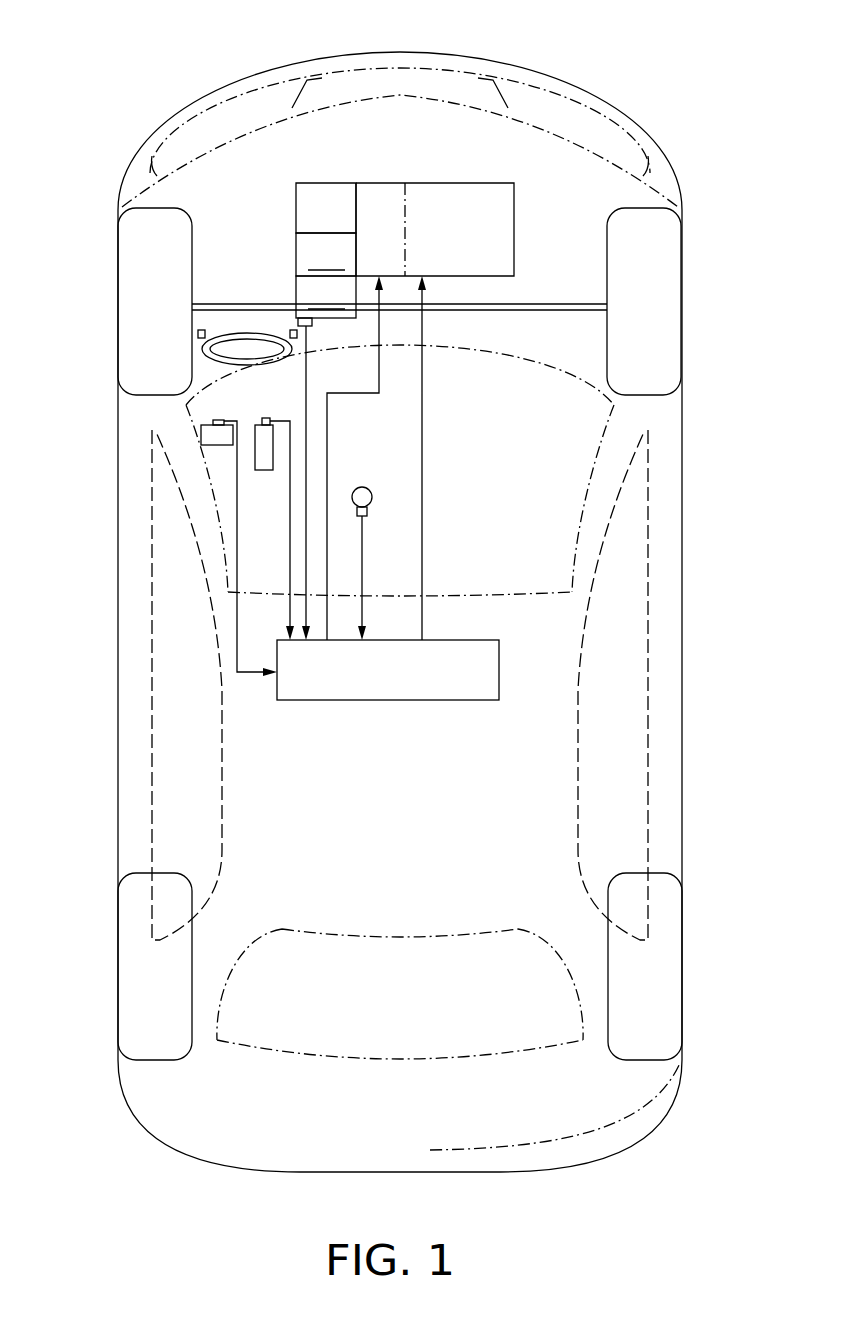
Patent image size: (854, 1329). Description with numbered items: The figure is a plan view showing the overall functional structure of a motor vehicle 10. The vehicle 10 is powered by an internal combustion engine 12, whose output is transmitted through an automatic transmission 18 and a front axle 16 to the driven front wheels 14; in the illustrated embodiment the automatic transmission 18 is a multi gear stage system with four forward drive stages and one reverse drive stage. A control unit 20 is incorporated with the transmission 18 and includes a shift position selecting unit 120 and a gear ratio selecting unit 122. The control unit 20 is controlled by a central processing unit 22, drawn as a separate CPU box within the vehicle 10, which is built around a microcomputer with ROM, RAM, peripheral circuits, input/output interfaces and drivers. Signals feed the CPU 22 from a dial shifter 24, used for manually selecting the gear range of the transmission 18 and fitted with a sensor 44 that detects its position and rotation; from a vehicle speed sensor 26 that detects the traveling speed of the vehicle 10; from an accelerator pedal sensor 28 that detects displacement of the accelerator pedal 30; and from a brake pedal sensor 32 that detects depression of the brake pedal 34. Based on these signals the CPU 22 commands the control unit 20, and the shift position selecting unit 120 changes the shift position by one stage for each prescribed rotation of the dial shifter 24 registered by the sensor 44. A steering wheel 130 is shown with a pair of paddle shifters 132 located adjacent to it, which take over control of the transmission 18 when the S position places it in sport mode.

The vehicle 10 is at (704, 76).
The internal combustion engine 12 is at (438, 197).
The wheels 14 is at (132, 245).
The front axle 16 is at (577, 303).
The automatic transmission 18 is at (323, 193).
The control unit 20 is at (382, 192).
The central processing unit 22 is at (425, 728).
The dial shifter 24 is at (362, 487).
The vehicle speed sensor 26 is at (302, 323).
The accelerator pedal sensor 28 is at (268, 418).
The accelerator pedal 30 is at (268, 460).
The brake pedal sensor 32 is at (212, 421).
The brake pedal 34 is at (217, 447).
The sensor 44 is at (363, 520).
The shift position selecting unit 120 is at (326, 254).
The gear ratio selecting unit 122 is at (326, 297).
The steering wheel 130 is at (203, 352).
The paddle shifters 132 is at (290, 334).